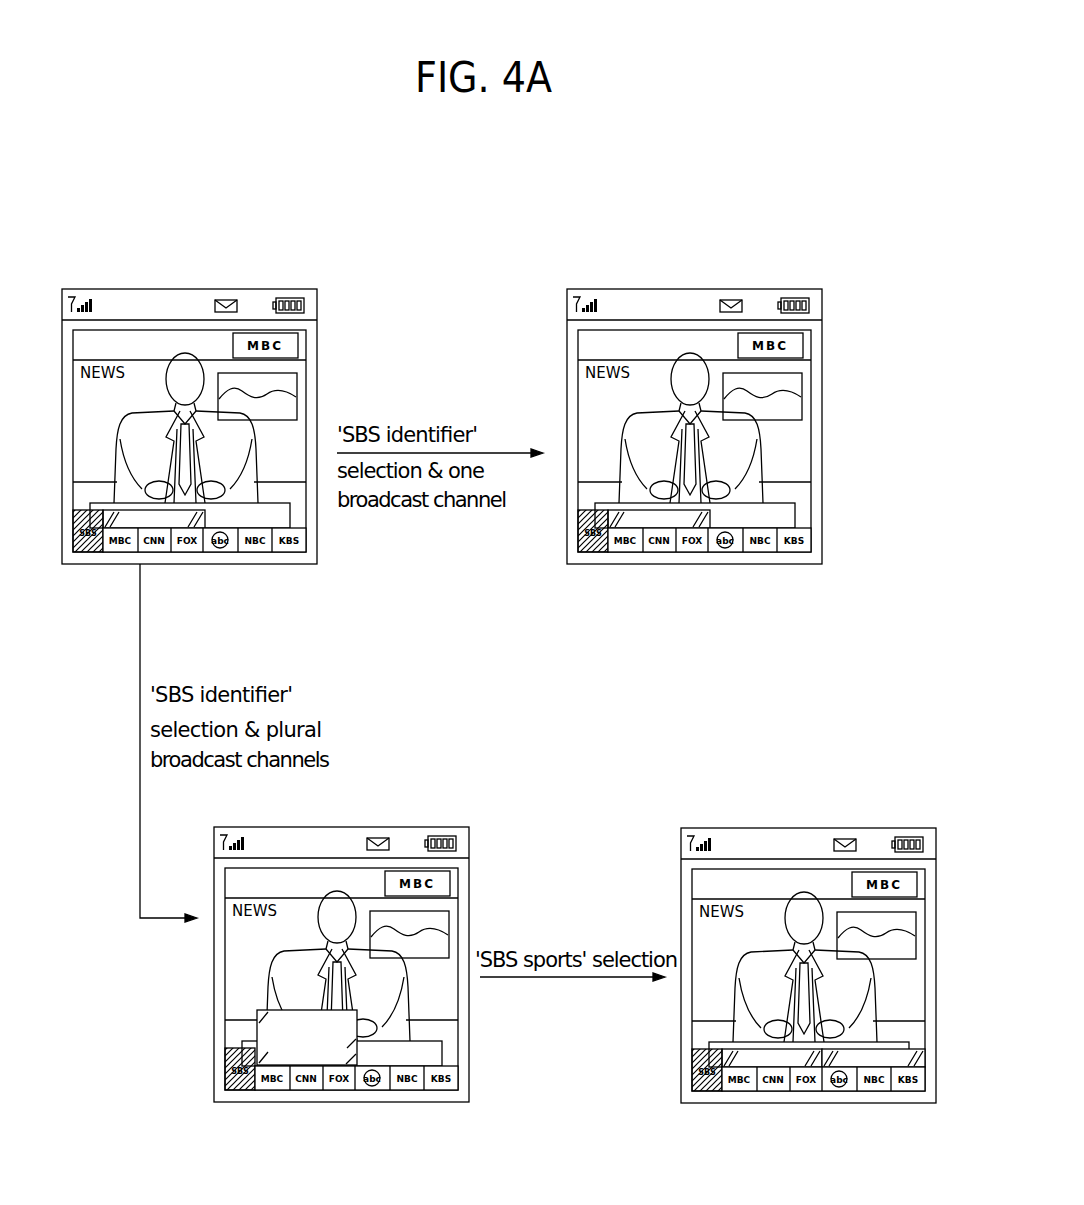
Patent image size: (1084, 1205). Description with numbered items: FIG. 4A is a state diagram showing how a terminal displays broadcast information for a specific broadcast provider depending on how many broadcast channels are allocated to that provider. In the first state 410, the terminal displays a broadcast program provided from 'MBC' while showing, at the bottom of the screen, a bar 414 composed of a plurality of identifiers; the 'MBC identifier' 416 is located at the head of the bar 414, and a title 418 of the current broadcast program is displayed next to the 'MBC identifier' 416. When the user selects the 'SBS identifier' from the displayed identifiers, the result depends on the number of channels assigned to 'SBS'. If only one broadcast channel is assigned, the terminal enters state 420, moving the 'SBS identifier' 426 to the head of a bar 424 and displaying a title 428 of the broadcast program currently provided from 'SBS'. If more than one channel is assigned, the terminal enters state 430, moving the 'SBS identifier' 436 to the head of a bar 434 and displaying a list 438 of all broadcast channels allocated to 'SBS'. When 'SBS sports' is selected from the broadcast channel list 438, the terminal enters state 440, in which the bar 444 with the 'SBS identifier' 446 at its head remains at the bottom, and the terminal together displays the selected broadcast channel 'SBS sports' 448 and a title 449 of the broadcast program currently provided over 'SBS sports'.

The screen state displaying MBC broadcast program 410 is at (189, 431).
The bar 414 is at (204, 585).
The MBC identifier 416 is at (83, 560).
The title of the broadcast program 418 is at (159, 563).
The screen state after SBS identifier selection with one broadcast channel 420 is at (694, 431).
The bar 424 is at (709, 585).
The SBS identifier 426 is at (588, 560).
The title of the broadcast program 428 is at (664, 563).
The screen state after SBS identifier selection with plural broadcast channels 430 is at (341, 969).
The bar 434 is at (356, 1123).
The SBS identifier 436 is at (235, 1098).
The list of broadcast channels 438 is at (312, 1082).
The screen state after SBS sports selection 440 is at (808, 970).
The bar 444 is at (823, 1124).
The SBS identifier 446 is at (702, 1099).
The SBS sports 448 is at (778, 1102).
The title of the broadcast program 449 is at (879, 1103).